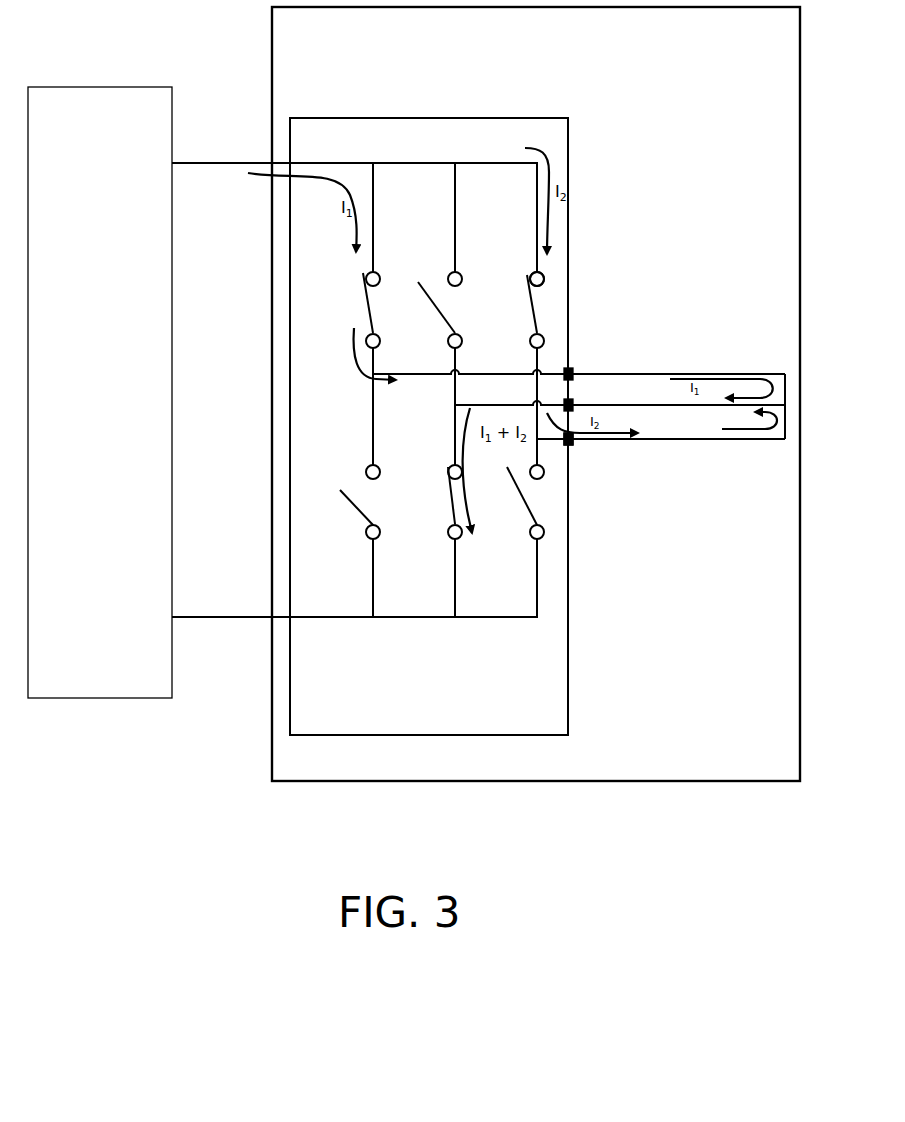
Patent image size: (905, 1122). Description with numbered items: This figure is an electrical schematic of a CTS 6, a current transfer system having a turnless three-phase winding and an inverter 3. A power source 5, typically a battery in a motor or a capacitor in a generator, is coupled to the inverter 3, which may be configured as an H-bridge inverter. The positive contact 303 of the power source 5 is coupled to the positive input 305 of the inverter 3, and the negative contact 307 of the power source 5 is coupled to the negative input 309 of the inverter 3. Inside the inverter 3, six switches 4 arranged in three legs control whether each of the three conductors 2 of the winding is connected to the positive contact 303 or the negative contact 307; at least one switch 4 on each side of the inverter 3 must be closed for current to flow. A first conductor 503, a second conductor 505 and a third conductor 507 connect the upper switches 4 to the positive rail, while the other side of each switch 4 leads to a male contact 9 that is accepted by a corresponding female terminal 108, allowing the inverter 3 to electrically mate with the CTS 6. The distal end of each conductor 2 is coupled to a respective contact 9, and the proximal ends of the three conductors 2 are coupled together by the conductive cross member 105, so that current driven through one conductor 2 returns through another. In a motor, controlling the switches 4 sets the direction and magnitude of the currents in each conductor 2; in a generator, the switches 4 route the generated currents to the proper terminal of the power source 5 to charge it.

The conductor 2 is at (618, 374).
The inverter 3 is at (556, 128).
The switch 4 is at (530, 275).
The power source 5 is at (106, 116).
The CTS 6 is at (724, 66).
The contact 9 is at (568, 445).
The cross member 105 is at (785, 418).
The female terminal 108 is at (573, 445).
The positive contact 303 is at (173, 164).
The positive input 305 is at (286, 159).
The negative contact 307 is at (172, 626).
The negative input 309 is at (285, 622).
The first conductor 503 is at (535, 175).
The second conductor 505 is at (450, 175).
The third conductor 507 is at (378, 260).